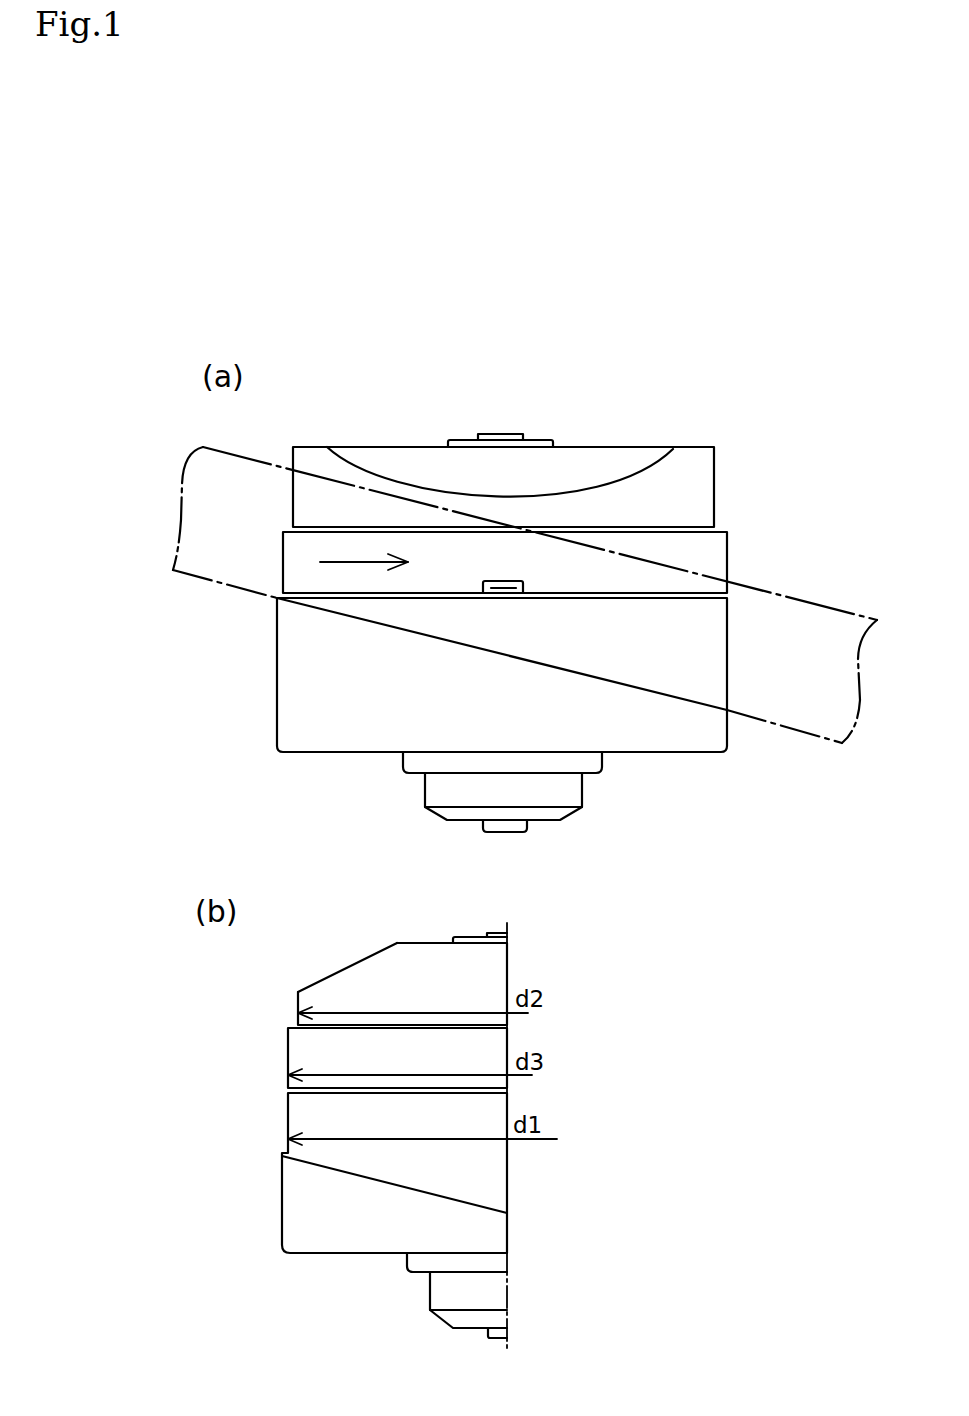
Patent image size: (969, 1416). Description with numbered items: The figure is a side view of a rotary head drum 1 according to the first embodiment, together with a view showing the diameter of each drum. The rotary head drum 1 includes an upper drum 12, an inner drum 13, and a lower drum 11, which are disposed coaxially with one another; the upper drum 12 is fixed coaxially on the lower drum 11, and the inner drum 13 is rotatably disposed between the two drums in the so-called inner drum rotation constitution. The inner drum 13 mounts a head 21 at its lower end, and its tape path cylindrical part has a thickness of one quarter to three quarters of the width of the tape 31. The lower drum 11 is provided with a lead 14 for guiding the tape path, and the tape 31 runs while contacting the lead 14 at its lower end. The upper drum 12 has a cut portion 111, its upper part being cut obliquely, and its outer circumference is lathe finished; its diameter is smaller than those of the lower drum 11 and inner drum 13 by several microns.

The rotary head drum 1 is at (272, 760).
The lower drum 11 is at (733, 743).
The upper drum 12 is at (713, 450).
The inner drum 13 is at (728, 538).
The lead 14 is at (647, 698).
The head 21 is at (495, 597).
The tape 31 is at (813, 603).
The cut portion 111 is at (597, 462).